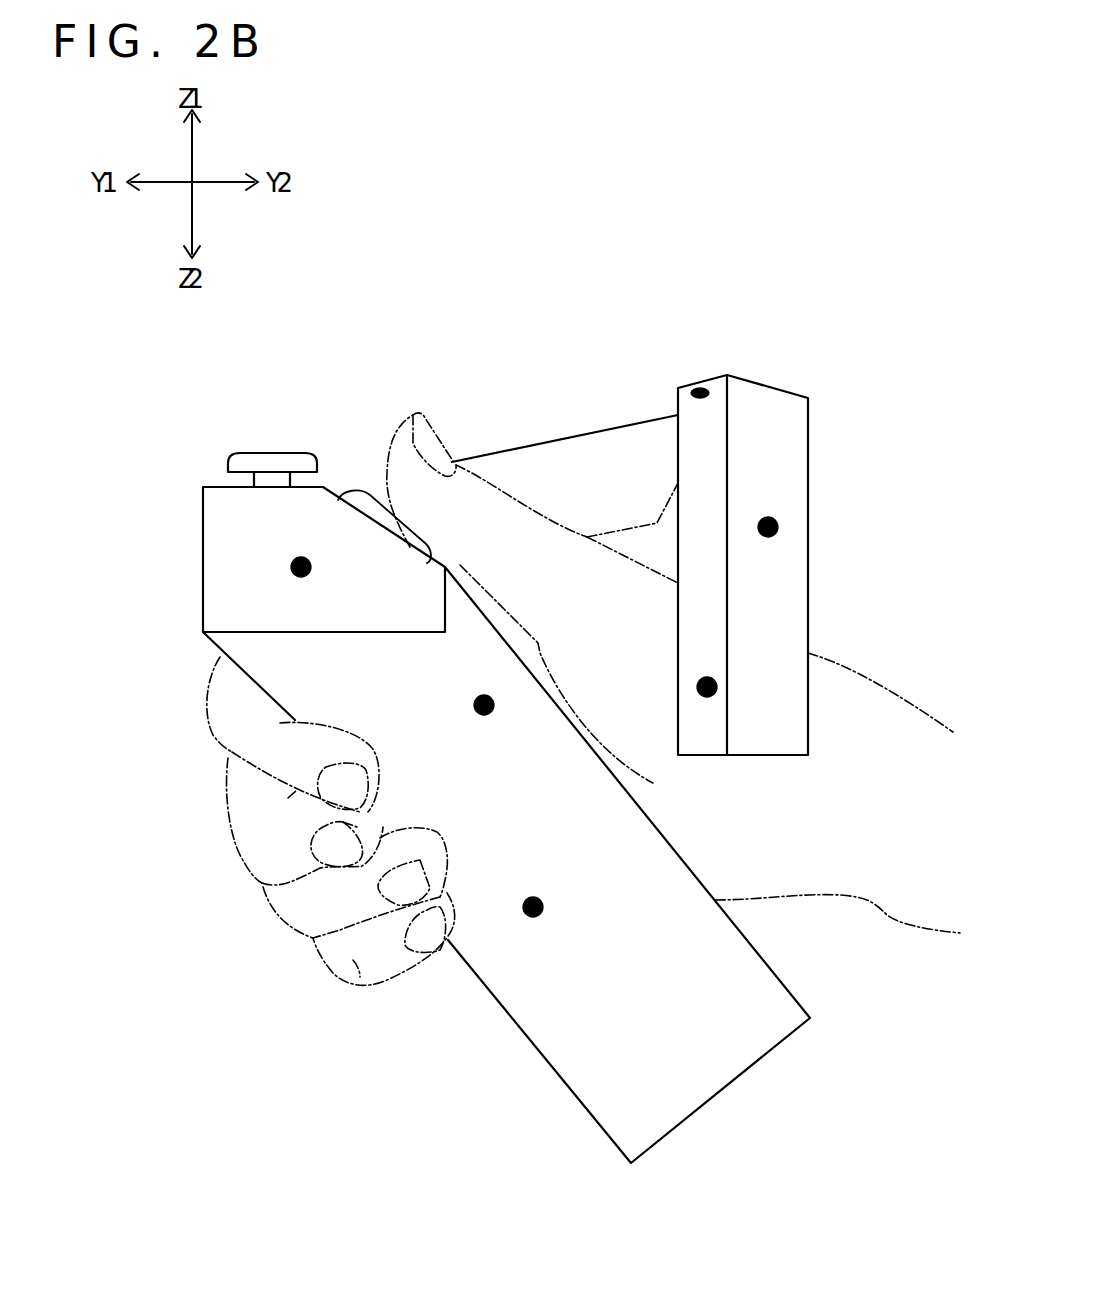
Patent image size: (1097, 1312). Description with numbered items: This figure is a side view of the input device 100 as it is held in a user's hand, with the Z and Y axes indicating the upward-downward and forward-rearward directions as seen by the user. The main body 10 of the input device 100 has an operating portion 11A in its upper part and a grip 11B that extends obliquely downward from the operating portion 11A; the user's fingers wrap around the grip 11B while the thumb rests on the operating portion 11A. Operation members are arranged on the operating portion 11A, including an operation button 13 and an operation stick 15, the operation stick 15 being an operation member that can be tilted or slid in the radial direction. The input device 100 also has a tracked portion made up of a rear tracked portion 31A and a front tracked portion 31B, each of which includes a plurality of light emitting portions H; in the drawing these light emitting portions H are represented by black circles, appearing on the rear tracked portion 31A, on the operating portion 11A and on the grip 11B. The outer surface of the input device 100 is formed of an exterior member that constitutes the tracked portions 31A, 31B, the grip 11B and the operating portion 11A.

The input device 100 is at (377, 313).
The main body 10 is at (90, 677).
The operating portion 11A is at (203, 632).
The grip 11B is at (407, 808).
The operation stick 15 is at (295, 462).
The operation button 13 is at (370, 502).
The front tracked portion 31B is at (518, 422).
The rear tracked portion 31A is at (813, 415).
The light emitting portions H is at (778, 522).